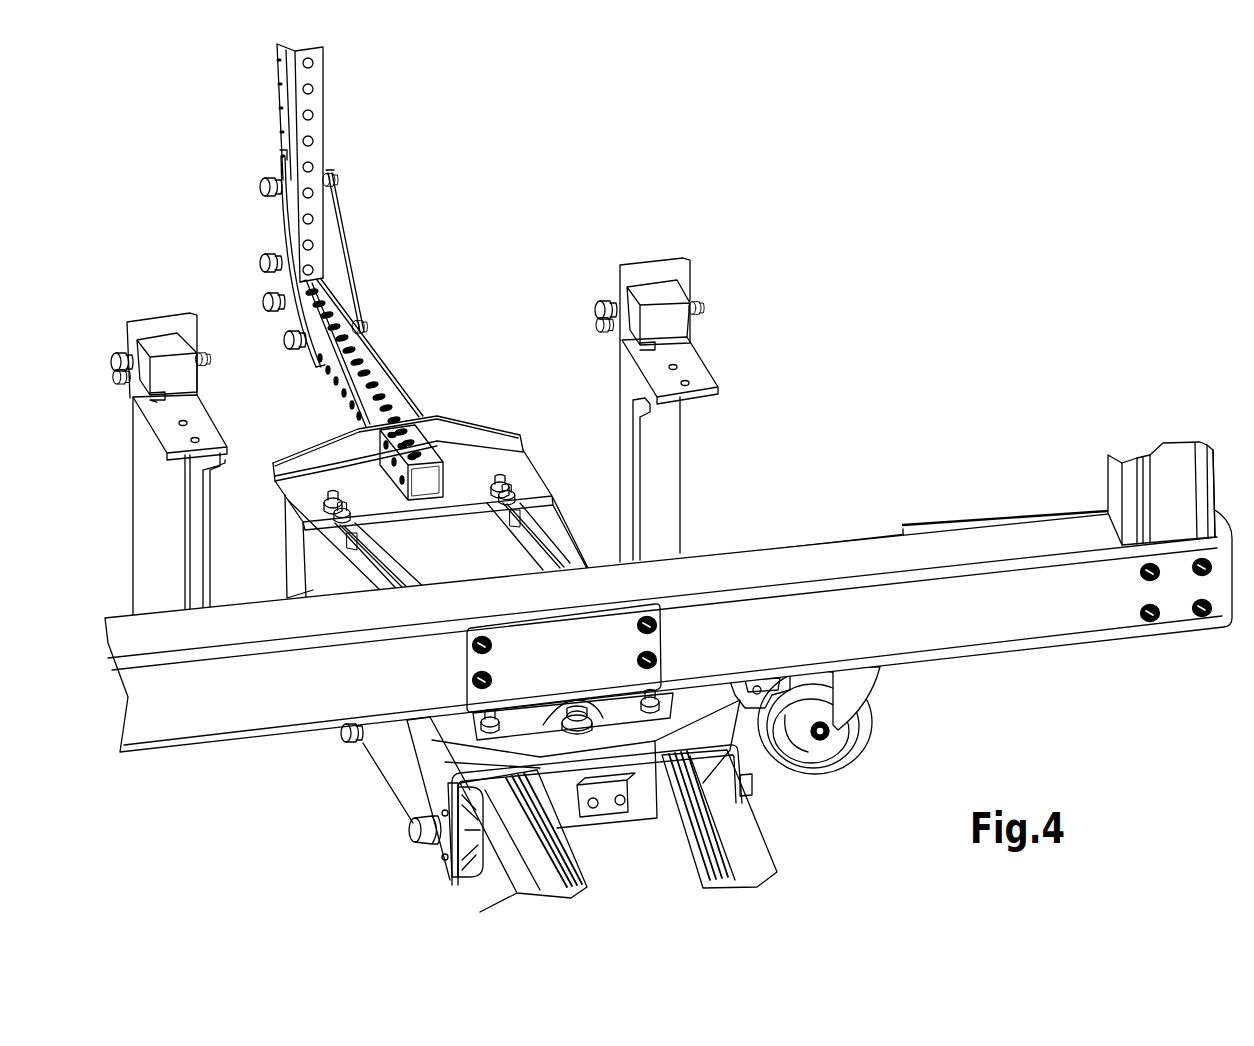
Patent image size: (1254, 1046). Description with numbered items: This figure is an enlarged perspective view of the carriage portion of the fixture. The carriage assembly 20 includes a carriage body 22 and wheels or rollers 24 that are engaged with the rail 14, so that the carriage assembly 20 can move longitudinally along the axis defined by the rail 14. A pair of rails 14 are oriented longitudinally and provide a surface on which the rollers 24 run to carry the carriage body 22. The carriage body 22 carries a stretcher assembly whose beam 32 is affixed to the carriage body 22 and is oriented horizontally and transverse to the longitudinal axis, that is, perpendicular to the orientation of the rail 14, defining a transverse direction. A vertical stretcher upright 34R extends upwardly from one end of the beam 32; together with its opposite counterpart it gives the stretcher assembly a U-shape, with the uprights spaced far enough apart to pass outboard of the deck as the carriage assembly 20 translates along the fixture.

The rail 14 is at (537, 877).
The carriage assembly 20 is at (492, 243).
The carriage body 22 is at (410, 767).
The rollers 24 is at (483, 853).
The beam 32 is at (1013, 610).
The right stretcher upright 34R is at (1165, 493).